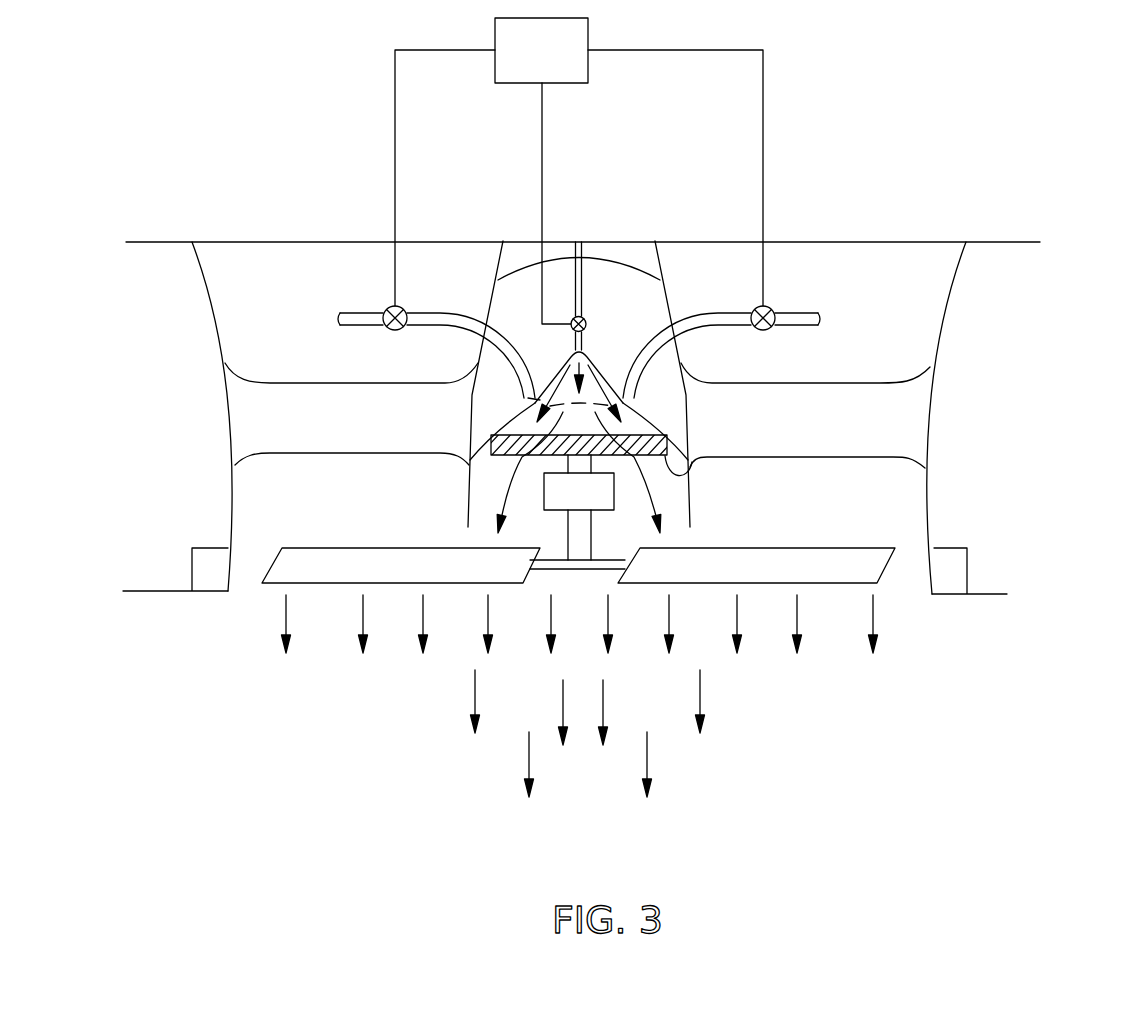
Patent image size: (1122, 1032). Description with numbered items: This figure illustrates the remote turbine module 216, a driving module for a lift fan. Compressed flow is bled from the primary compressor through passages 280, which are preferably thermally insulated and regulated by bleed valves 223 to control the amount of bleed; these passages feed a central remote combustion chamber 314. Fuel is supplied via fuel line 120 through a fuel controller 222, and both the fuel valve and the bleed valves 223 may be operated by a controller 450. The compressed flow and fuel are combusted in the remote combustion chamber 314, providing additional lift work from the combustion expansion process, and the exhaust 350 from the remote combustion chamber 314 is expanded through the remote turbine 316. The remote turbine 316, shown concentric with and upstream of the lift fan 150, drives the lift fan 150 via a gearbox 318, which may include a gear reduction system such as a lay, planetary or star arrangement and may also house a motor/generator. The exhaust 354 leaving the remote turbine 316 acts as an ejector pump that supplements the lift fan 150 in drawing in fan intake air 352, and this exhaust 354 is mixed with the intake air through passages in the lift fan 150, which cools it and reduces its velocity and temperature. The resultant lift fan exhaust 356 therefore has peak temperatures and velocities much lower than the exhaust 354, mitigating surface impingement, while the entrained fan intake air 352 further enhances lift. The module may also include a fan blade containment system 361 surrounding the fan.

The remote turbine module 216 is at (893, 144).
The controller 450 is at (579, 171).
The fan intake air 352 is at (280, 256).
The passages 280 is at (322, 318).
The bleed valve 223 is at (579, 330).
The fuel line 120 is at (586, 252).
The fuel controller 222 is at (588, 324).
The remote combustion chamber 314 is at (604, 353).
The exhaust from the remote combustion chamber 350 is at (533, 400).
The remote turbine 316 is at (680, 441).
The gearbox 318 is at (628, 499).
The exhaust from the remote turbine 354 is at (480, 515).
The lift fan 150 is at (300, 565).
The fan blade containment system 361 is at (195, 572).
The lift fan exhaust 356 is at (764, 760).